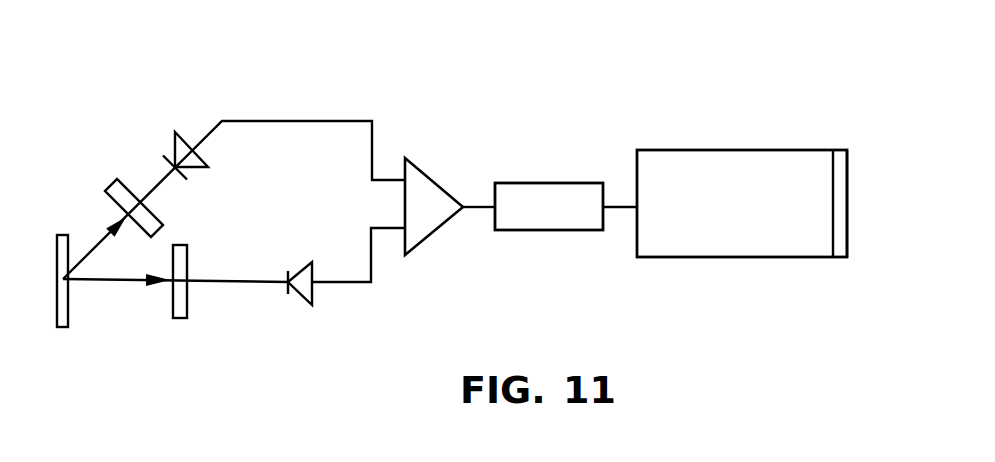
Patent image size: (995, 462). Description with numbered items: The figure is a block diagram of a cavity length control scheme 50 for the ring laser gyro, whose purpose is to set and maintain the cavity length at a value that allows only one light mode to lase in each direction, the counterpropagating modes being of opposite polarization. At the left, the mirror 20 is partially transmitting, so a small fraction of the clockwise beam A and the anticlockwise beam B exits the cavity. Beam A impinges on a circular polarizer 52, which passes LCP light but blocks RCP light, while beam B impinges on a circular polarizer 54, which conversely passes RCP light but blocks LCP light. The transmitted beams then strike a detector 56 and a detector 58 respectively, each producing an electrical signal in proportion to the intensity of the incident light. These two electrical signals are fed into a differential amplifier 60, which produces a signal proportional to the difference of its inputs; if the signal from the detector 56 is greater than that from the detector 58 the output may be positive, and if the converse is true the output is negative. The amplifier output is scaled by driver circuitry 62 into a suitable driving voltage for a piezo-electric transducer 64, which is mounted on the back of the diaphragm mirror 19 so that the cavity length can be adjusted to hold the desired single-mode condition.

The diaphragm mirror 19 is at (847, 235).
The mirror 20 is at (68, 298).
The cavity length control scheme 50 is at (530, 108).
The circular polarizer 52 is at (128, 187).
The circular polarizer 54 is at (187, 290).
The detector 56 is at (183, 137).
The detector 58 is at (300, 298).
The differential amplifier 60 is at (420, 167).
The driver circuitry 62 is at (512, 232).
The piezo-electric transducer 64 is at (663, 258).